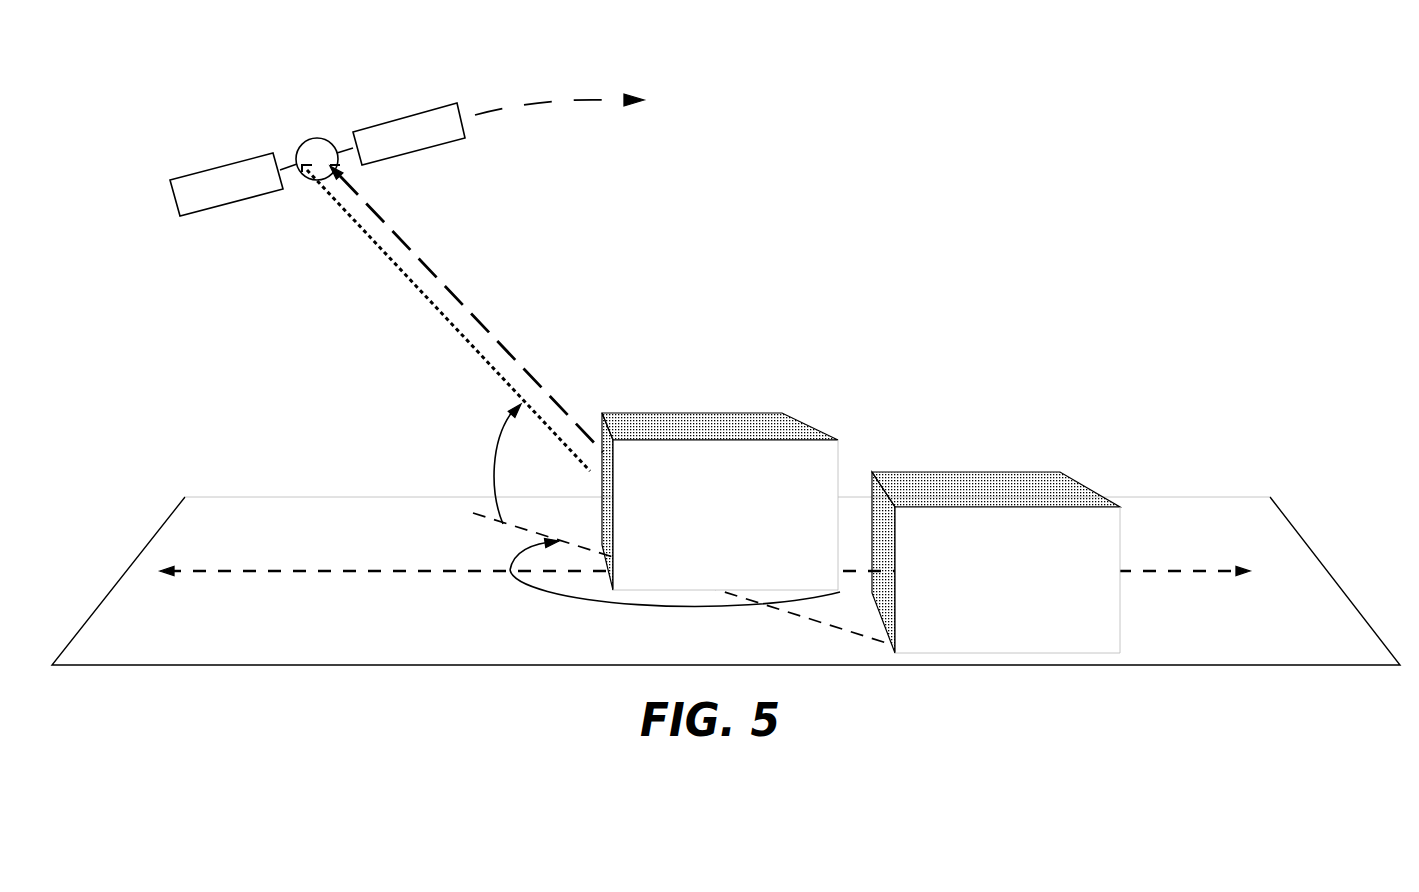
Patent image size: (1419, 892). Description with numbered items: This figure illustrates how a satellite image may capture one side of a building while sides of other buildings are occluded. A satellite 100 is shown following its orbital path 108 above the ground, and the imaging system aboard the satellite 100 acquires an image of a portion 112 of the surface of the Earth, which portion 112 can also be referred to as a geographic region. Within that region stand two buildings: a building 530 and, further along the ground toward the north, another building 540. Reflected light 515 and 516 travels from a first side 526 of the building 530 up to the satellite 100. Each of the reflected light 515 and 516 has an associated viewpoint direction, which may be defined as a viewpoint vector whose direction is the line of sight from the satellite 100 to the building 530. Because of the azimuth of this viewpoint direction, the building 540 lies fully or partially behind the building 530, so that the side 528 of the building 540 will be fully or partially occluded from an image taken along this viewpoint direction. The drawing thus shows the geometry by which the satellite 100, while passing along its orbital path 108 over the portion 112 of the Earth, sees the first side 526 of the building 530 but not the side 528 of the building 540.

The satellite 100 is at (302, 138).
The orbital path 108 is at (553, 103).
The portion of the surface of the Earth 112 is at (125, 807).
The reflected light 515 is at (458, 303).
The reflected light 516 is at (475, 350).
The first side 526 is at (603, 487).
The side 528 is at (887, 543).
The building 530 is at (720, 501).
The building 540 is at (996, 562).